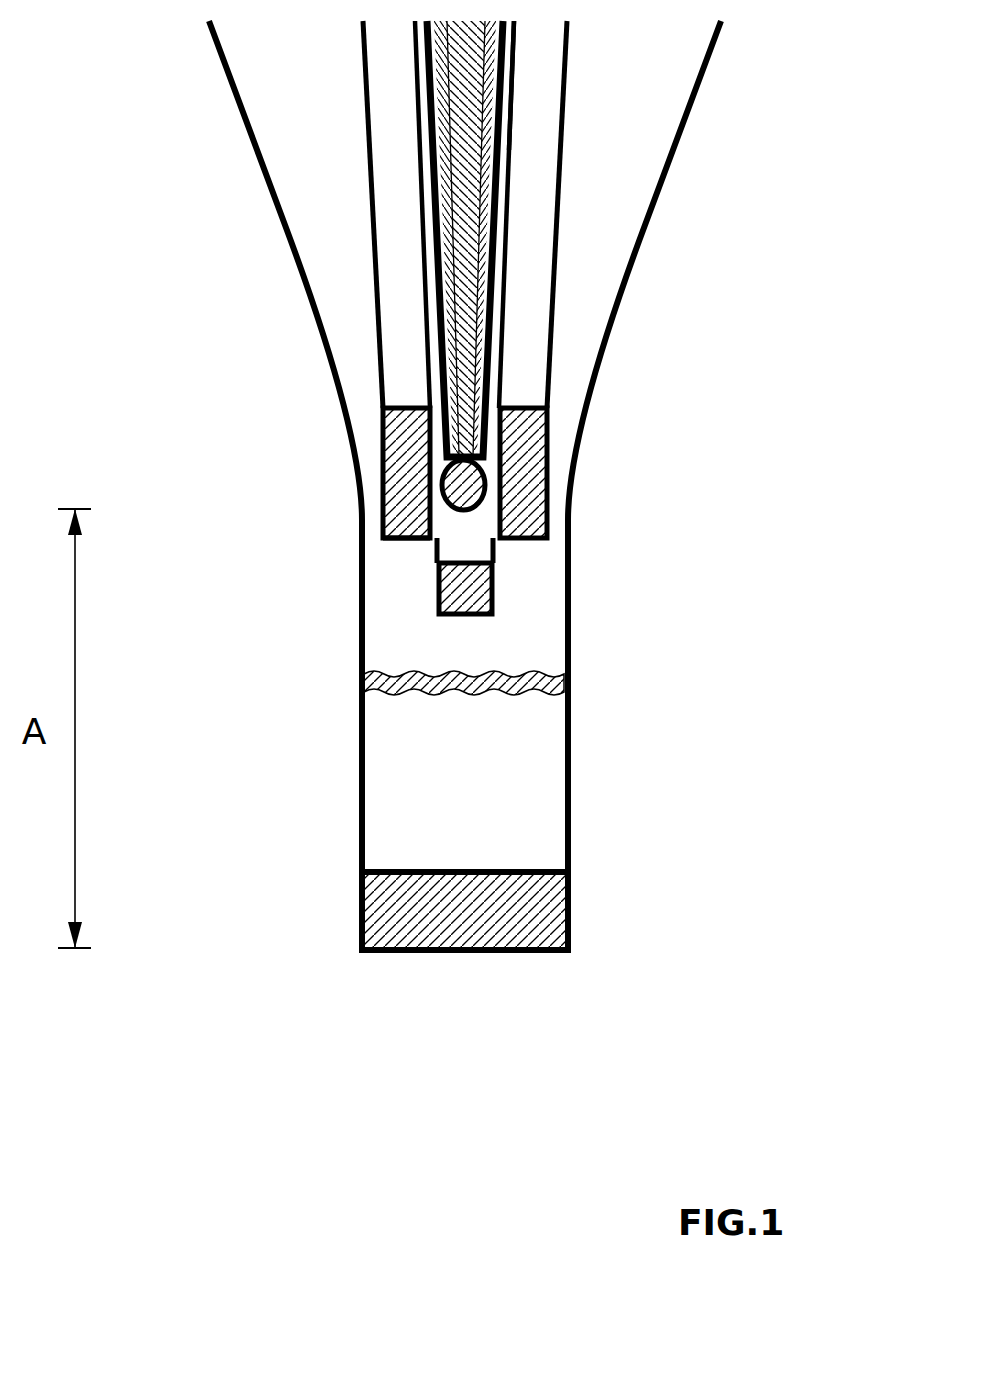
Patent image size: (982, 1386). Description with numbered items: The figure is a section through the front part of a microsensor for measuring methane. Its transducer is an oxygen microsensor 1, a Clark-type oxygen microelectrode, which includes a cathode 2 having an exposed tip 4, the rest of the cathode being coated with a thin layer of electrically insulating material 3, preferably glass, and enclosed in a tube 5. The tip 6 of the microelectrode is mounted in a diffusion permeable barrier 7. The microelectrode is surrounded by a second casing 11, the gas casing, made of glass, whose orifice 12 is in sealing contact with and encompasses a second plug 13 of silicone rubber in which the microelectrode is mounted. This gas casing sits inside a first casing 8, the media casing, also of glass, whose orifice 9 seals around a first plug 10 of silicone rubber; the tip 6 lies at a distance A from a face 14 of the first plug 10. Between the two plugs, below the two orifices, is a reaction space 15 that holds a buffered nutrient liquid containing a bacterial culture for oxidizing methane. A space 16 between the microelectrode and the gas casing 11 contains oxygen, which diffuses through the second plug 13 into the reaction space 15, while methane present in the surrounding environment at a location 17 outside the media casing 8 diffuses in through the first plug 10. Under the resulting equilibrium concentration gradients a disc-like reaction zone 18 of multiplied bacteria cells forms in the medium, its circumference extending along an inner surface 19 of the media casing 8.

The oxygen microsensor 1 is at (527, 117).
The cathode 2 is at (465, 179).
The electrically insulating material 3 is at (490, 221).
The exposed tip 4 is at (463, 485).
The tube 5 is at (512, 262).
The tip 6 is at (514, 556).
The diffusion permeable barrier 7 is at (498, 592).
The first casing 8 is at (568, 765).
The orifice 9 is at (548, 989).
The first plug 10 is at (497, 928).
The second casing 11 is at (368, 255).
The orifice 12 is at (405, 549).
The second plug 13 is at (415, 483).
The face 14 is at (394, 953).
The reaction space 15 is at (438, 787).
The space 16 is at (525, 309).
The location 17 is at (436, 1083).
The reaction zone 18 is at (566, 666).
The inner surface 19 is at (563, 793).